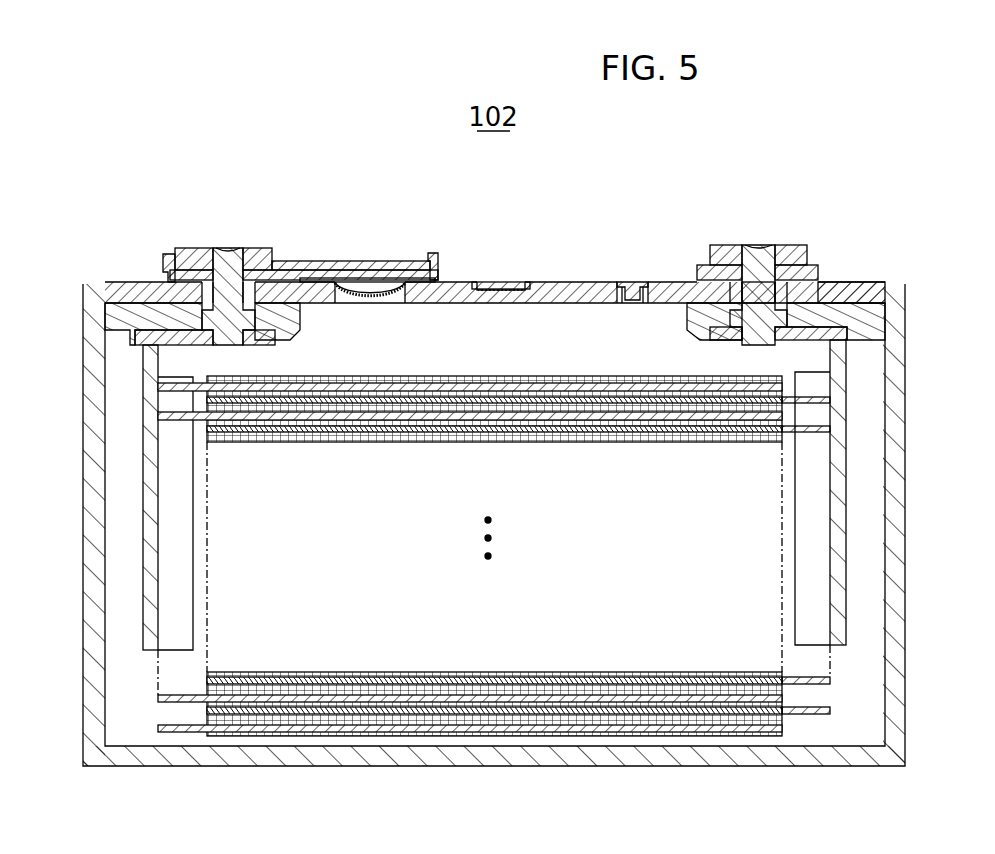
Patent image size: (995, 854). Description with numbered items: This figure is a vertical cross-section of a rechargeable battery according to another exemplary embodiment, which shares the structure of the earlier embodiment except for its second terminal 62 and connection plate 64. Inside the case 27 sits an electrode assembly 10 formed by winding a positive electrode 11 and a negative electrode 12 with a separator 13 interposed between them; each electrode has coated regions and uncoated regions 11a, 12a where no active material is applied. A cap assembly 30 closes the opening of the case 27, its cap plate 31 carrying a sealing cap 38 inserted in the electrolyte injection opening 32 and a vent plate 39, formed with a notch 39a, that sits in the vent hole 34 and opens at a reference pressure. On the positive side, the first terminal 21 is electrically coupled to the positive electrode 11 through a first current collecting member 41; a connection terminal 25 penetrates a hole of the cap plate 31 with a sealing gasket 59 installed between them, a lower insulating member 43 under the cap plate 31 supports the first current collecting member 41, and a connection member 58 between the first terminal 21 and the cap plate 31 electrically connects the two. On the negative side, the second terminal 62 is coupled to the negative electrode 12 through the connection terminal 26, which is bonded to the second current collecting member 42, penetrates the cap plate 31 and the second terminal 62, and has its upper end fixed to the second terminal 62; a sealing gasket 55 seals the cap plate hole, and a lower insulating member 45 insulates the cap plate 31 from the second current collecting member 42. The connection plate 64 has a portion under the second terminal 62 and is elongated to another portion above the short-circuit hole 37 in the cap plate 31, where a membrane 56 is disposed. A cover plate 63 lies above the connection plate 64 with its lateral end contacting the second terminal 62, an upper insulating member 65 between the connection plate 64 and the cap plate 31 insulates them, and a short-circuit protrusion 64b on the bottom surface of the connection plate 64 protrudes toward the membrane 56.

The electrode assembly 10 is at (495, 597).
The positive electrode 11 is at (755, 605).
The uncoated region 11a is at (813, 714).
The negative electrode 12 is at (467, 601).
The uncoated region 12a is at (175, 733).
The separator 13 is at (500, 700).
The first terminal 21 is at (792, 245).
The connection terminal 25 is at (758, 248).
The connection terminal 26 is at (232, 248).
The case 27 is at (905, 553).
The cap assembly 30 is at (464, 276).
The cap plate 31 is at (860, 284).
The electrolyte injection opening 32 is at (632, 303).
The vent hole 34 is at (522, 276).
The short-circuit hole 37 is at (336, 278).
The sealing cap 38 is at (632, 283).
The vent plate 39 is at (525, 283).
The notch 39a is at (497, 282).
The first current collecting member 41 is at (848, 437).
The second current collecting member 42 is at (143, 396).
The lower insulating member 43 is at (868, 317).
The lower insulating member 45 is at (124, 323).
The sealing gasket 55 is at (140, 286).
The membrane 56 is at (380, 283).
The connection member 58 is at (816, 272).
The sealing gasket 59 is at (690, 283).
The second terminal 62 is at (193, 248).
The cover plate 63 is at (290, 262).
The connection plate 64 is at (361, 249).
The short-circuit protrusion 64b is at (357, 305).
The upper insulating member 65 is at (436, 255).